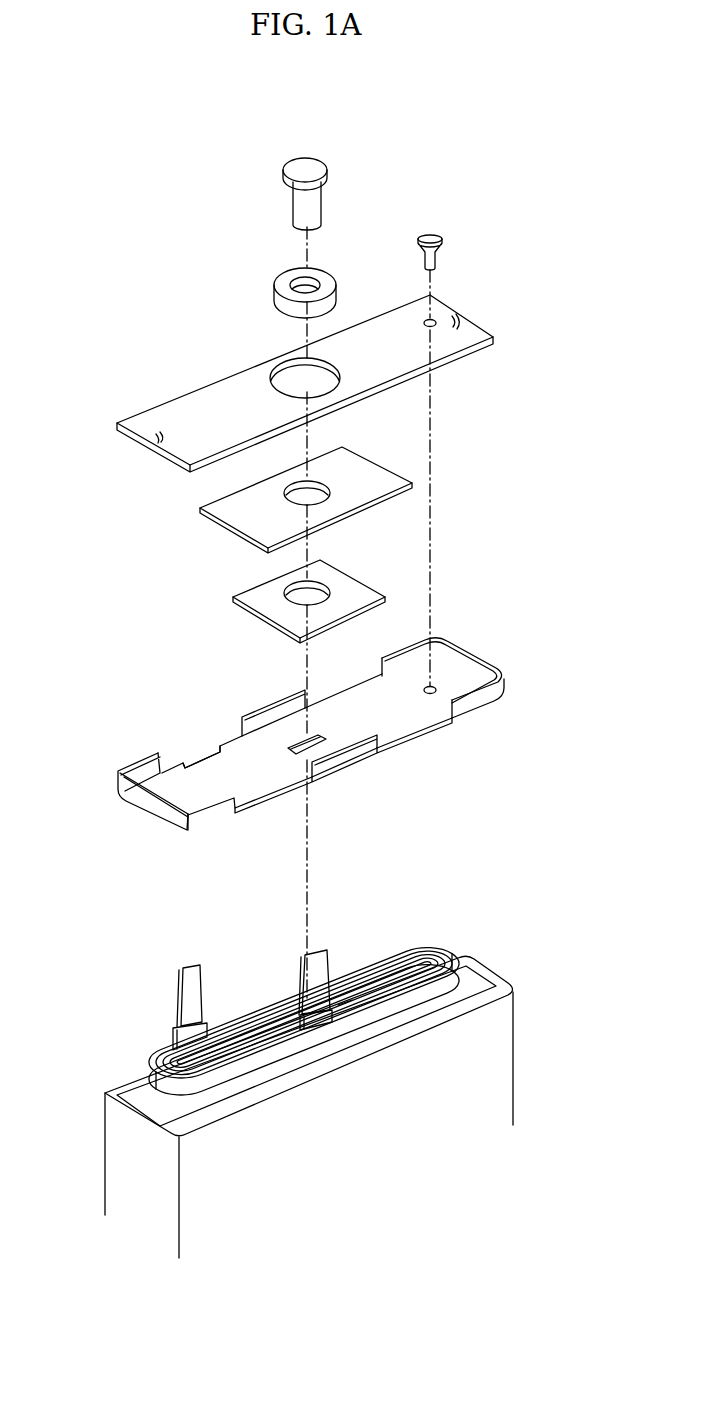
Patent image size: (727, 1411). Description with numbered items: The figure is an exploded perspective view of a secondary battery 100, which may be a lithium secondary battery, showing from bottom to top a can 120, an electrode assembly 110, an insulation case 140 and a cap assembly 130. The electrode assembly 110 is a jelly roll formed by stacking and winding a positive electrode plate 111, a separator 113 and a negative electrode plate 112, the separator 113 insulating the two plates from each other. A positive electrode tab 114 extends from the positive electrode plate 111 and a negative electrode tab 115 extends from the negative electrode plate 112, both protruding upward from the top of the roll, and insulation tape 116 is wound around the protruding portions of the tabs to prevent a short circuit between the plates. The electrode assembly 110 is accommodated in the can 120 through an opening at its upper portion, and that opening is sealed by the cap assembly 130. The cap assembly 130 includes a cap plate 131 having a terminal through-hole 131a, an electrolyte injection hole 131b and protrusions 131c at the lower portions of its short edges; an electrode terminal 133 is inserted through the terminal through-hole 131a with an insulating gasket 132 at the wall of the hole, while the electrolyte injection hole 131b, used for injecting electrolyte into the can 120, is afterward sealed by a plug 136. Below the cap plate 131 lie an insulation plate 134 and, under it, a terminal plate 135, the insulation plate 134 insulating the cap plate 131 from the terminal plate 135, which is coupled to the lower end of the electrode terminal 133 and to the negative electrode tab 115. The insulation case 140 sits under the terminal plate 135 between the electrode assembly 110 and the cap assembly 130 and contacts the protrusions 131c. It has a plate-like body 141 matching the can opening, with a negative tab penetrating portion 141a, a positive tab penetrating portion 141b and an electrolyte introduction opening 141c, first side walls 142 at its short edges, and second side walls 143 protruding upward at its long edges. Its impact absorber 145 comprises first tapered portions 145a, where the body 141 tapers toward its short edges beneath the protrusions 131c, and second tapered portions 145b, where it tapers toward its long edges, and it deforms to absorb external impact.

The secondary battery 100 is at (48, 174).
The electrode assembly 110 is at (537, 903).
The positive electrode plate 111 is at (444, 970).
The negative electrode plate 112 is at (467, 959).
The separator 113 is at (447, 957).
The positive electrode tab 114 is at (187, 990).
The negative electrode tab 115 is at (307, 982).
The insulation tape 116 is at (345, 1007).
The can 120 is at (503, 1055).
The cap assembly 130 is at (548, 611).
The cap plate 131 is at (440, 340).
The terminal through-hole 131a is at (335, 363).
The electrolyte injection hole 131b is at (433, 318).
The protrusion 131c is at (463, 310).
The gasket 132 is at (279, 285).
The electrode terminal 133 is at (293, 170).
The insulation plate 134 is at (240, 518).
The terminal plate 135 is at (272, 599).
The plug 136 is at (434, 233).
The insulation case 140 is at (108, 742).
The body 141 is at (405, 733).
The negative tab penetrating portion 141a is at (303, 740).
The positive tab penetrating portion 141b is at (207, 753).
The electrolyte introduction opening 141c is at (437, 688).
The first side wall 142 is at (147, 800).
The second side wall 143 is at (248, 712).
The impact absorber 145 is at (282, 908).
The first tapered portion 145a is at (490, 721).
The second tapered portion 145b is at (259, 828).